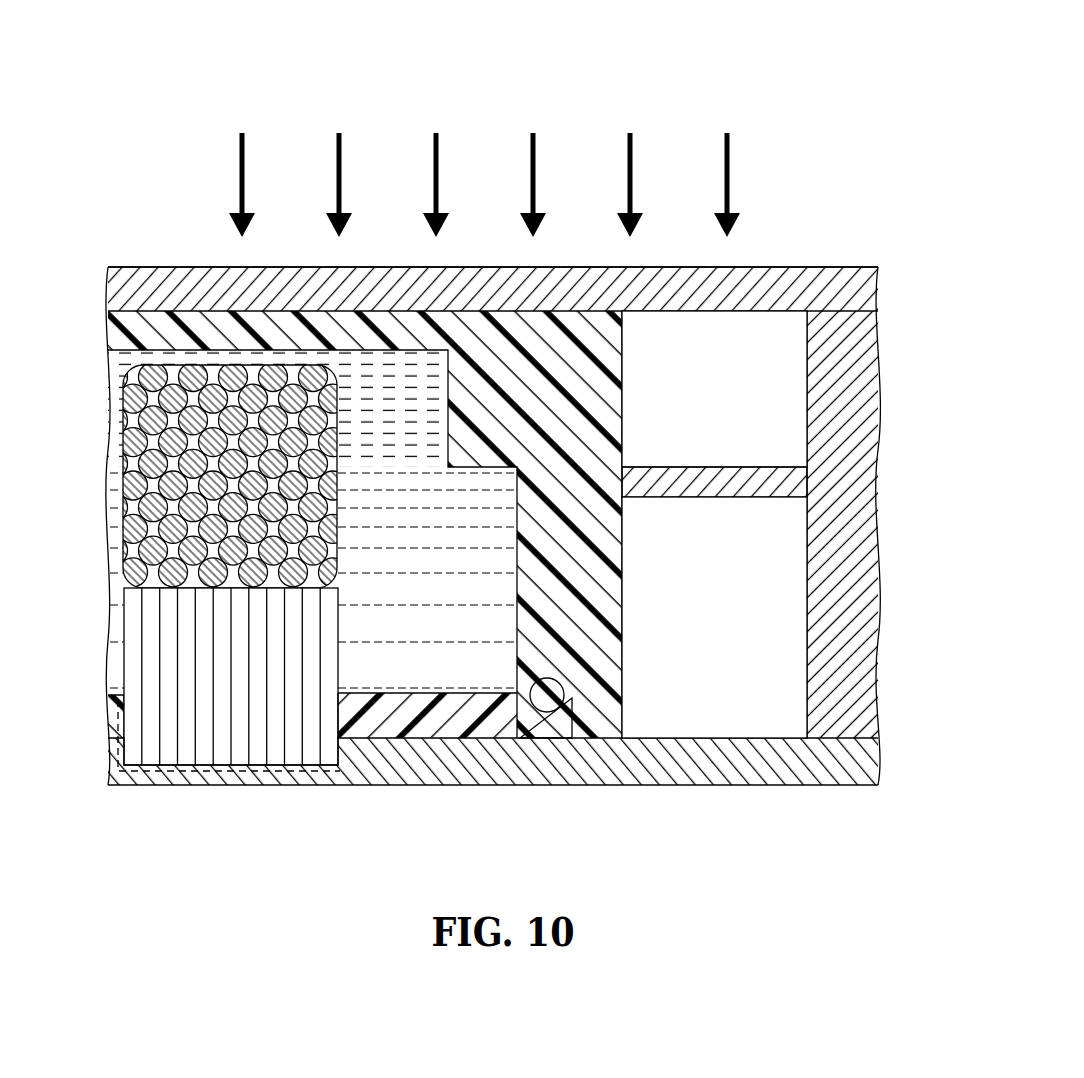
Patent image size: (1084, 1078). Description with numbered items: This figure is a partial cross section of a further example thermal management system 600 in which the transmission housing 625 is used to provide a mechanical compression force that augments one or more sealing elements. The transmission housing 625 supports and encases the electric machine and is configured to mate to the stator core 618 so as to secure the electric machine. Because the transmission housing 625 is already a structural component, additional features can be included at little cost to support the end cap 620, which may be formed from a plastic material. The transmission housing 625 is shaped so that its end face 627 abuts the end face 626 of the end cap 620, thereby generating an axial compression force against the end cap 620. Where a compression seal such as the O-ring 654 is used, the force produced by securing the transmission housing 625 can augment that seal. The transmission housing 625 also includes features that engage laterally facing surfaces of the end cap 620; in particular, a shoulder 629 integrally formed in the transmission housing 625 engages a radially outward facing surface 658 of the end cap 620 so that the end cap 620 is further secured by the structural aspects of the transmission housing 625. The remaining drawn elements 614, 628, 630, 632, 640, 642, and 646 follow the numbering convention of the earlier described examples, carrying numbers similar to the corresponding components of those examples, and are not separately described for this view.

The thermal management system 600 is at (700, 70).
The base portion 614 is at (232, 786).
The stator core 618 is at (455, 768).
The end cap 620 is at (135, 325).
The transmission housing 625 is at (860, 320).
The end face of end cap 626 is at (335, 292).
The end face of transmission housing 627 is at (778, 267).
The filler region 628 is at (428, 583).
The shoulder 629 is at (700, 467).
The fiber layer 630 is at (175, 643).
The fiber bundle 632 is at (128, 392).
The bottom band 640 is at (397, 722).
The wedge 642 is at (577, 700).
The lower cavity 646 is at (625, 722).
The O-ring 654 is at (545, 718).
The radially outward facing surface 658 is at (622, 388).